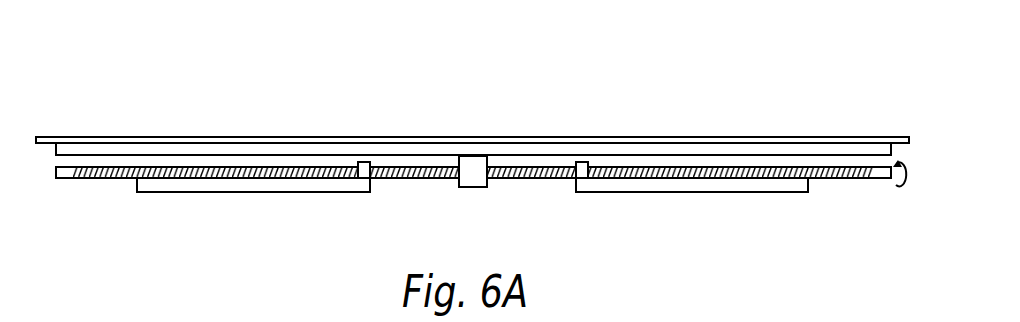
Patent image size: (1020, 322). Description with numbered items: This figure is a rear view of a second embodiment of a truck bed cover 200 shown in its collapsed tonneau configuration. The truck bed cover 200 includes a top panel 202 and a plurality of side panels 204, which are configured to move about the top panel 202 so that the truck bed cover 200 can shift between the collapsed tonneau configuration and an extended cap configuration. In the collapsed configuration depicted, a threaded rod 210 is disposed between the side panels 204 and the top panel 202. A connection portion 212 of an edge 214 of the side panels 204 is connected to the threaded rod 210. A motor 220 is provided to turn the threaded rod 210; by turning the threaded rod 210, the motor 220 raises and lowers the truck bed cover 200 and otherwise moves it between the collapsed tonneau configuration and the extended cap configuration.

The truck bed cover 200 is at (472, 164).
The top panel 202 is at (325, 137).
The side panels 204 is at (280, 192).
The threaded rod 210 is at (863, 178).
The connection portion 212 is at (580, 170).
The edge 214 is at (585, 192).
The motor 220 is at (471, 163).